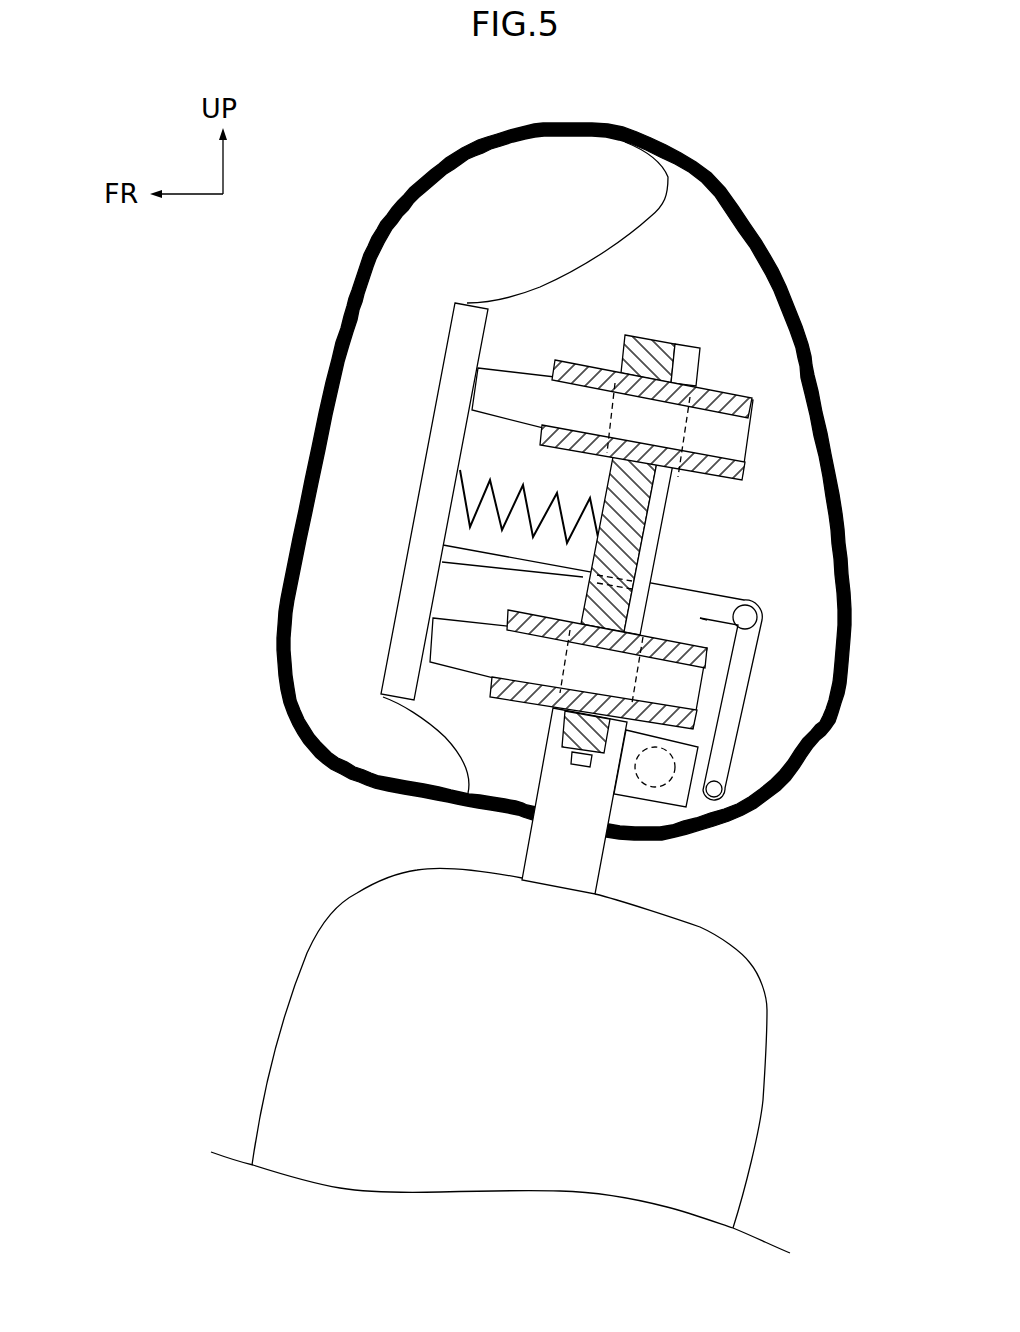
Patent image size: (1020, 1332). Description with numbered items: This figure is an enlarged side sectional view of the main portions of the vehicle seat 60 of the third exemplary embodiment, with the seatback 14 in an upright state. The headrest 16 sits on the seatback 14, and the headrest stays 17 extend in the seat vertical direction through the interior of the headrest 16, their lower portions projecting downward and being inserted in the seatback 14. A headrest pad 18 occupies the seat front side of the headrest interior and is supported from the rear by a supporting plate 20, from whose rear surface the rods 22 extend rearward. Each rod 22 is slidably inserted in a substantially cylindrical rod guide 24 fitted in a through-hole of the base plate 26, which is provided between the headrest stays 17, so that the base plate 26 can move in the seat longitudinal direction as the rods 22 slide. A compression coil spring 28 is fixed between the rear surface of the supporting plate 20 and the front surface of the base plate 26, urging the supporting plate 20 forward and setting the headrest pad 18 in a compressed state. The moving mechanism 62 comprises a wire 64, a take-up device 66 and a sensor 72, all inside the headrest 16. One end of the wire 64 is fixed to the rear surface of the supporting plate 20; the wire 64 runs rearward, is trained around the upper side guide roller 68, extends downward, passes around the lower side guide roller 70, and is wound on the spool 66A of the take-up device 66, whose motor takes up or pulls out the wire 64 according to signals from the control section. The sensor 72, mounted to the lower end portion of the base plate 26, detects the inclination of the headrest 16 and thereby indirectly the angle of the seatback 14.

The seatback 14 is at (769, 1027).
The headrest 16 is at (660, 140).
The headrest stays 17 is at (602, 866).
The headrest pad 18 is at (668, 196).
The supporting plate 20 is at (452, 392).
The rods 22 is at (507, 370).
The rod guide 24 is at (727, 390).
The base plate 26 is at (657, 336).
The compression coil spring 28 is at (500, 490).
The vehicle seat 60 is at (140, 451).
The moving mechanism 62 is at (782, 587).
The wire 64 is at (748, 697).
The take-up device 66 is at (700, 765).
The spool 66A is at (650, 787).
The upper side guide roller 68 is at (760, 647).
The lower side guide roller 70 is at (732, 776).
The sensor 72 is at (577, 770).